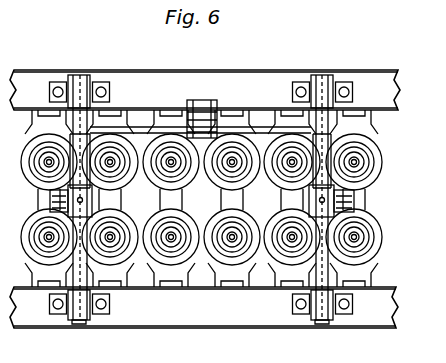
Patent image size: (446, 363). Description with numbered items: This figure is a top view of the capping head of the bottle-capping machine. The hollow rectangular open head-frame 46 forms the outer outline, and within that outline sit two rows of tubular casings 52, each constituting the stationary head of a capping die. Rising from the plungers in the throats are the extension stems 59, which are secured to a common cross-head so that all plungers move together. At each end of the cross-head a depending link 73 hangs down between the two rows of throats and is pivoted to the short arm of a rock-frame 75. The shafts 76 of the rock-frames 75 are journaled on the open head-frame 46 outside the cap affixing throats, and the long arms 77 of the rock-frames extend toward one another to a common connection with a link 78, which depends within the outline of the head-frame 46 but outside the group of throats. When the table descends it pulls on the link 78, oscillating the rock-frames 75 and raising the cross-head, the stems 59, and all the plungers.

The open frame 46 is at (205, 199).
The tubular casing 52 is at (183, 190).
The extension stem 59 is at (170, 236).
The depending link 73 is at (50, 200).
The rock-frame 75 is at (68, 135).
The shaft 76 is at (88, 276).
The long arm 77 is at (141, 127).
The link 78 is at (216, 105).